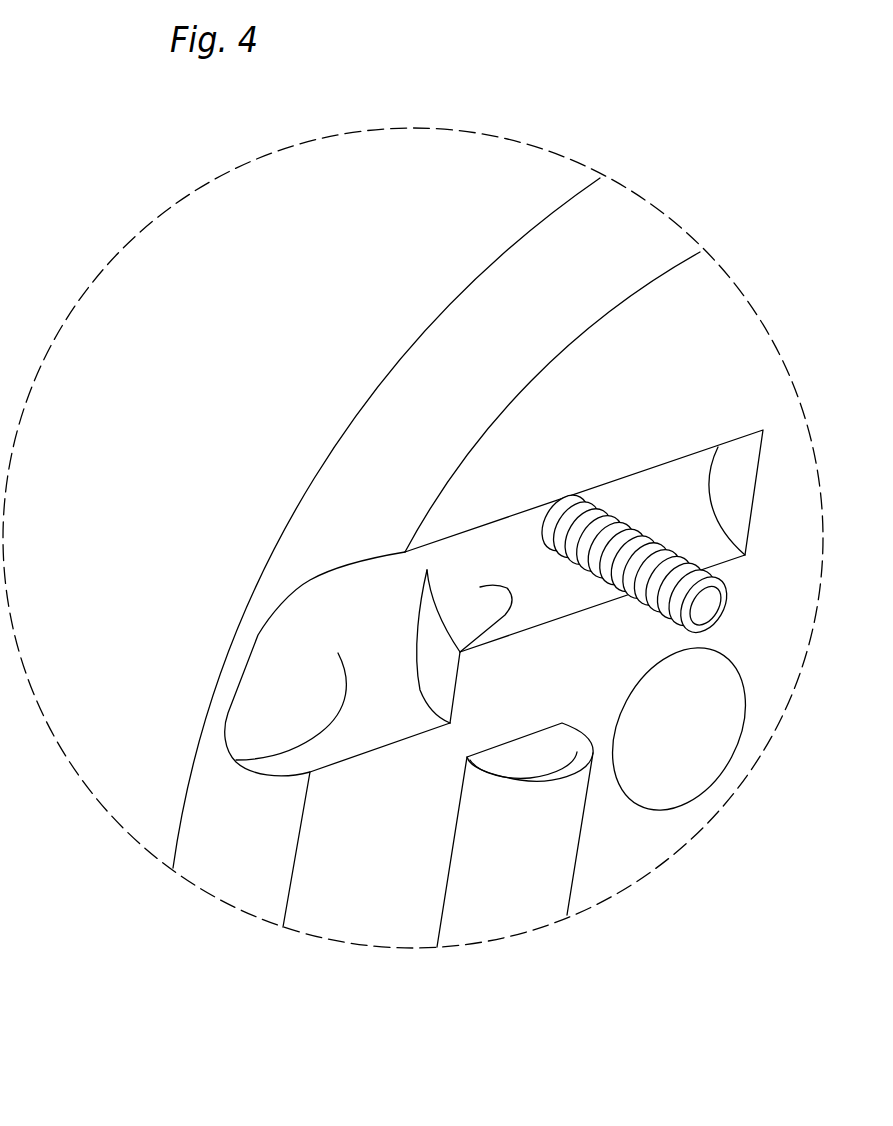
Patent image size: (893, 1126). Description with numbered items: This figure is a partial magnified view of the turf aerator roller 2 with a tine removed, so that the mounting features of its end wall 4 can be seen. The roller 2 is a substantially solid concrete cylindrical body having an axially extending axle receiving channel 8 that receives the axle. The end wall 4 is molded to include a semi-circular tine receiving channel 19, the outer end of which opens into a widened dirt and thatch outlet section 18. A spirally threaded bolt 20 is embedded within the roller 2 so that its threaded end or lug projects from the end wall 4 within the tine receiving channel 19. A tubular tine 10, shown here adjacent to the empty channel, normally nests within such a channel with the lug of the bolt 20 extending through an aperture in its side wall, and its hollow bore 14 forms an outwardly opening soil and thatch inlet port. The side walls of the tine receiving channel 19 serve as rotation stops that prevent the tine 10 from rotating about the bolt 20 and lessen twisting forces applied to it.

The roller 2 is at (243, 253).
The end wall 4 is at (697, 340).
The axle receiving channel 8 is at (670, 767).
The tubular tine 10 is at (537, 888).
The hollow bore 14 is at (460, 652).
The dirt and thatch outlet section 18 is at (236, 760).
The tine receiving channel 19 is at (683, 508).
The spirally threaded bolt 20 is at (707, 605).